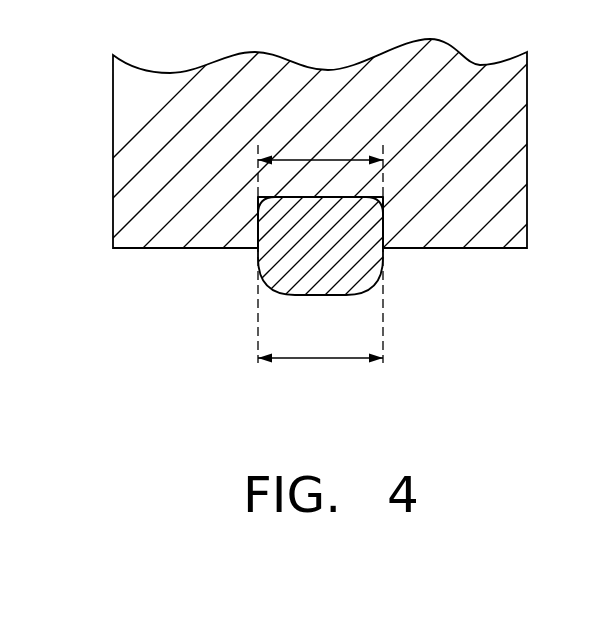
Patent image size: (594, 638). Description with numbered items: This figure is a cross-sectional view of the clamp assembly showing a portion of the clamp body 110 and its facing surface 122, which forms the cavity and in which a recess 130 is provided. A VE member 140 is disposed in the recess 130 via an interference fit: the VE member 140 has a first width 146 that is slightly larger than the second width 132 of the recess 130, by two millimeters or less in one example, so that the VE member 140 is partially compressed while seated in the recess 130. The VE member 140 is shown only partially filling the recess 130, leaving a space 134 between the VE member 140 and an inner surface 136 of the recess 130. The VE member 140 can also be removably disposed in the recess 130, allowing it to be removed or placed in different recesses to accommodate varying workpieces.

The substrate 110 is at (251, 58).
The facing surface 122 is at (203, 249).
The recess 130 is at (250, 219).
The second width 132 is at (315, 155).
The space 134 is at (384, 198).
The inner surface 136 is at (300, 197).
The VE member 140 is at (360, 284).
The first width 146 is at (322, 359).